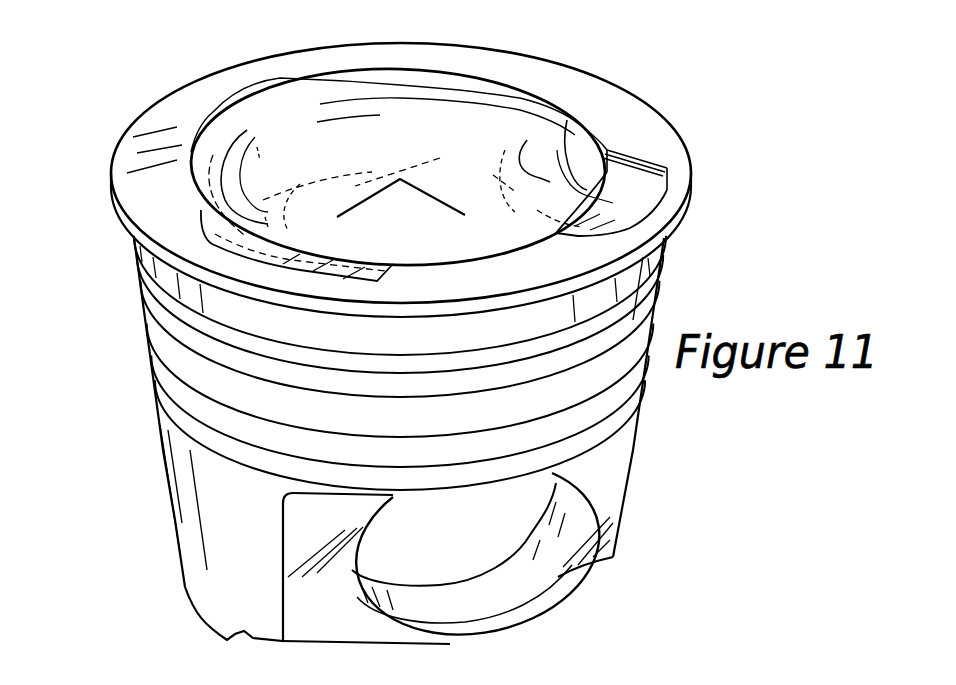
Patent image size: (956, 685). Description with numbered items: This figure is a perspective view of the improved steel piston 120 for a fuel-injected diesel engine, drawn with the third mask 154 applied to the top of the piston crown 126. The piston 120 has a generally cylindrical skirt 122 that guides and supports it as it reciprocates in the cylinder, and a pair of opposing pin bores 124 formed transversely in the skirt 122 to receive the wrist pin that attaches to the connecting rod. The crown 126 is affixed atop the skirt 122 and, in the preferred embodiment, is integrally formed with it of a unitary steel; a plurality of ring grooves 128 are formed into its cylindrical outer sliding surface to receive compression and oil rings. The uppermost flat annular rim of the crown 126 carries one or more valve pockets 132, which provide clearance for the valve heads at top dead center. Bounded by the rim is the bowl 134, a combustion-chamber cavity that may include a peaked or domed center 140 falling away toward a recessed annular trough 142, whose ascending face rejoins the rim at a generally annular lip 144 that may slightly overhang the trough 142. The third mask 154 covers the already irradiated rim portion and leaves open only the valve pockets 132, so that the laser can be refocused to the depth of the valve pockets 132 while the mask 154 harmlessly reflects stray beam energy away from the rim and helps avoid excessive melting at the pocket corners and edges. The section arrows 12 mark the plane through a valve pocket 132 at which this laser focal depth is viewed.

The piston 120 is at (710, 90).
The skirt portion 122 is at (213, 588).
The pin bores 124 is at (447, 603).
The piston crown 126 is at (672, 243).
The ring grooves 128 is at (637, 297).
The valve pockets 132 is at (658, 190).
The bowl 134 is at (468, 117).
The bowl floor 140 is at (400, 180).
The trough 142 is at (517, 177).
The lip 144 is at (363, 107).
The third mask 154 is at (170, 115).
The section line 12- 12 is at (445, 172).